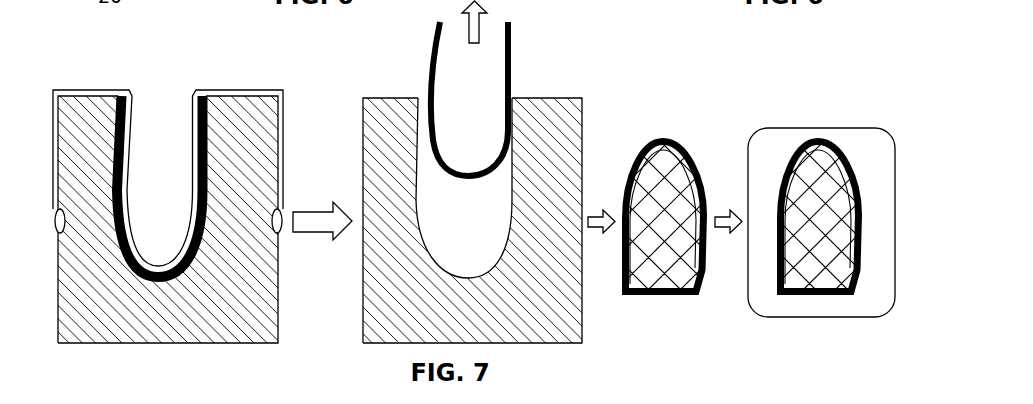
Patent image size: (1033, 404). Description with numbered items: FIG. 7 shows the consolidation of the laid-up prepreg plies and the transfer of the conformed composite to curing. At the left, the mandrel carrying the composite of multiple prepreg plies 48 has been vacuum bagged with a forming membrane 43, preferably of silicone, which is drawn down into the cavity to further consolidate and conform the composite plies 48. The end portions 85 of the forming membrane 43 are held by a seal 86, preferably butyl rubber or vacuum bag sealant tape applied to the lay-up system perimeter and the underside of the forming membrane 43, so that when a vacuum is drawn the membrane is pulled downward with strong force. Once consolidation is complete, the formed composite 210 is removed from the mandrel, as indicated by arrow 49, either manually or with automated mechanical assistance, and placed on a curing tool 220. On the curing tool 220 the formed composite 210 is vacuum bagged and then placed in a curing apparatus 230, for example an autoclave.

The end portions 85 is at (58, 209).
The seal 86 is at (62, 218).
The forming membrane 43 is at (112, 96).
The composite of multiple prepreg plies 48 is at (119, 130).
The removal direction arrow 49 is at (482, 23).
The formed composite 210 is at (512, 67).
The curing tool 220 is at (652, 297).
The curing apparatus 230 is at (820, 127).